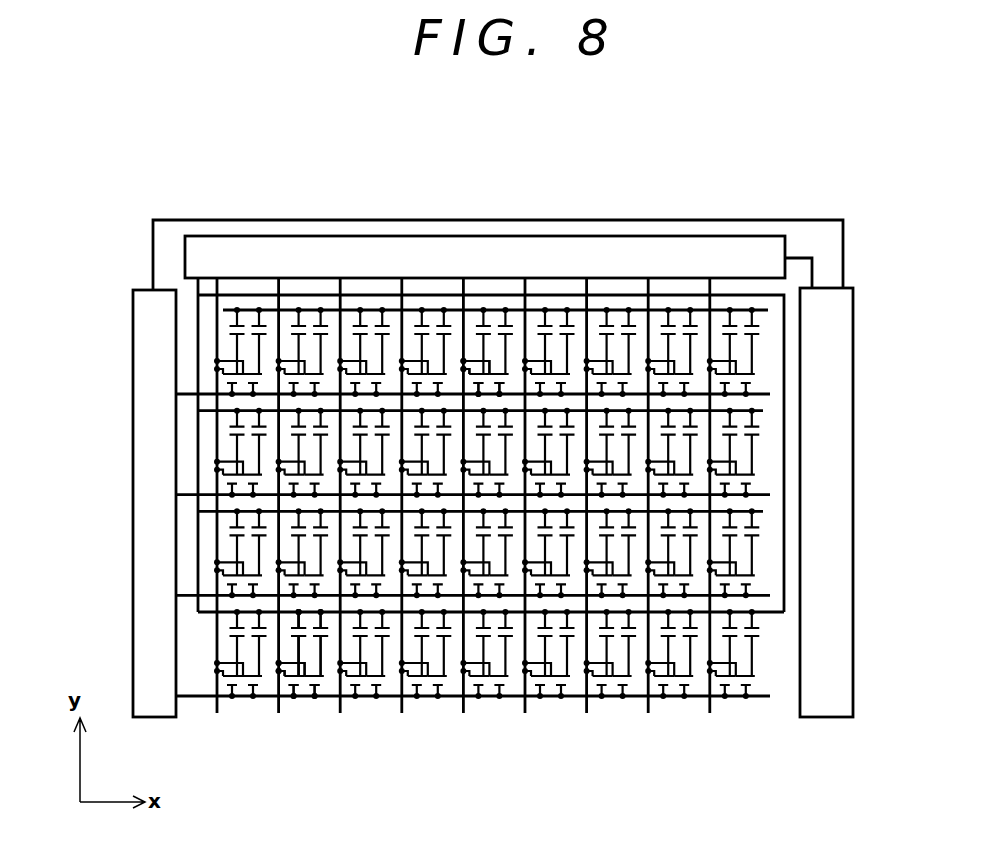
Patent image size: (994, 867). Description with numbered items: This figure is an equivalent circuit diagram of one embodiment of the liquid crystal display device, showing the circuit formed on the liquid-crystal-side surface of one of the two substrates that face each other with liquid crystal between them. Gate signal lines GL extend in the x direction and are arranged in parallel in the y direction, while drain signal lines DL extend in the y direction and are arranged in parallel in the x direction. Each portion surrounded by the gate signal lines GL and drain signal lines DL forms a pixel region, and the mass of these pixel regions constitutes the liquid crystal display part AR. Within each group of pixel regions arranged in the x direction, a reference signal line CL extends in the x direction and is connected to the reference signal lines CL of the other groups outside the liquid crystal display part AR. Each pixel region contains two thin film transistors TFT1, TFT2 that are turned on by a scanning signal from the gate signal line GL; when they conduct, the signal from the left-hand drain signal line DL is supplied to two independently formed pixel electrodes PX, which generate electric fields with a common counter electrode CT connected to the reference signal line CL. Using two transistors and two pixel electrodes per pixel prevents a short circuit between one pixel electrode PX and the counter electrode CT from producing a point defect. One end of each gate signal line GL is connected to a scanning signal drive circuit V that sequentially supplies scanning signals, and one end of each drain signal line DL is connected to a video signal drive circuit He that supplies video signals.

The drain signal line DL is at (283, 288).
The gate signal line GL is at (189, 396).
The reference signal line CL is at (763, 411).
The thin film transistor TFT1 is at (477, 382).
The thin film transistor TFT2 is at (510, 382).
The video signal drive circuit He is at (723, 248).
The scanning signal drive circuit V is at (150, 593).
The counter electrode CT is at (297, 626).
The pixel electrode PX is at (297, 636).
The liquid crystal display part AR is at (498, 724).